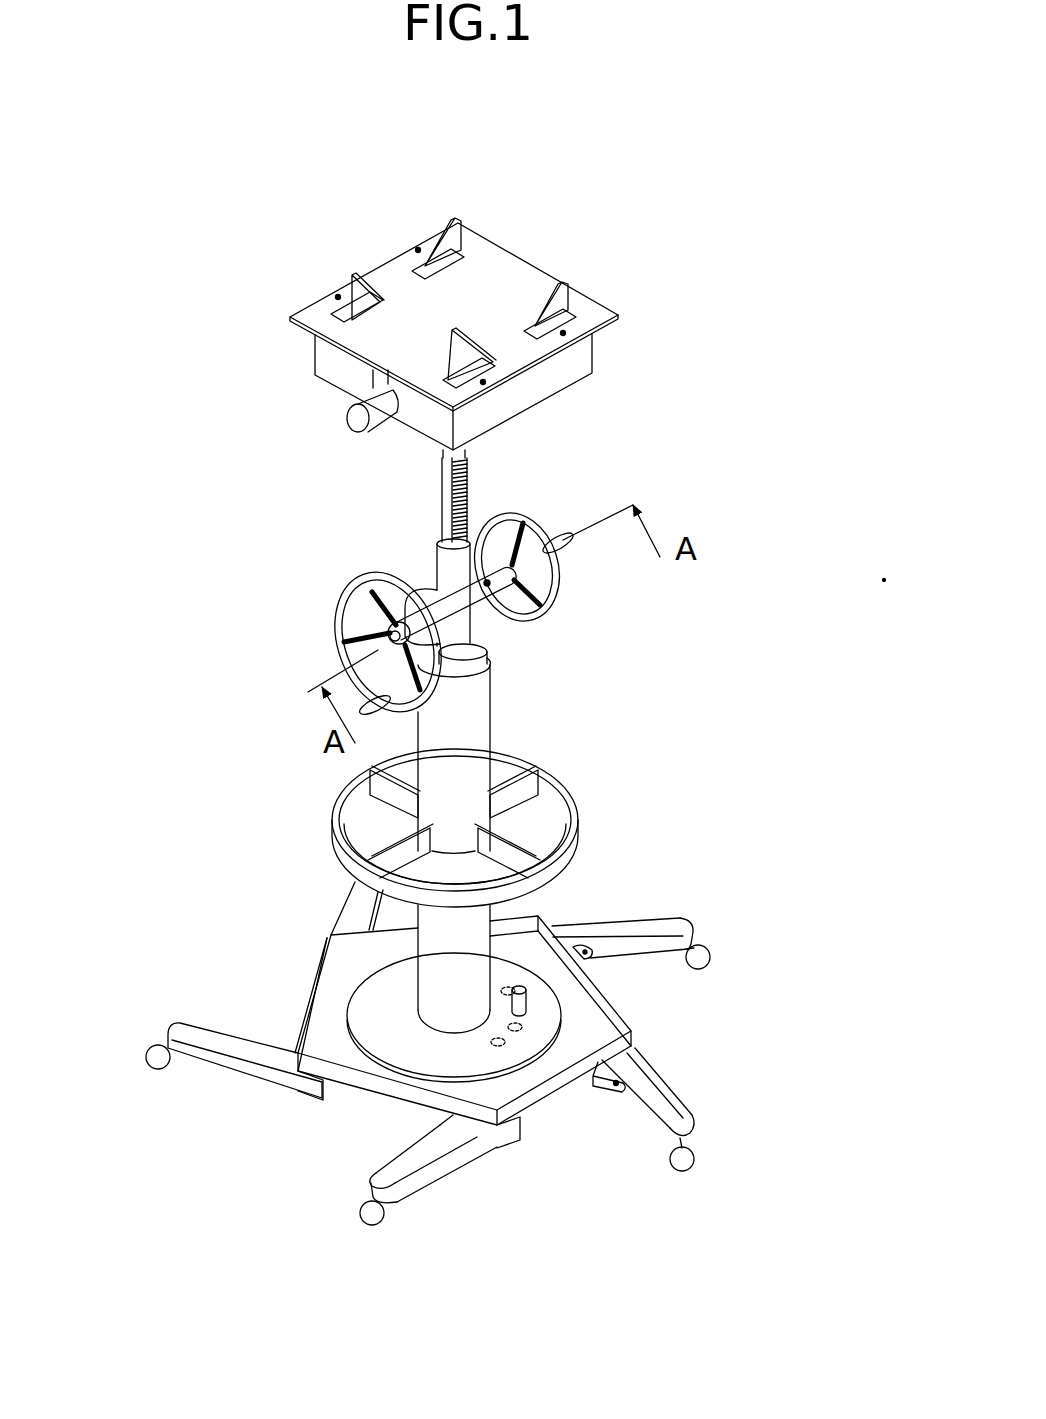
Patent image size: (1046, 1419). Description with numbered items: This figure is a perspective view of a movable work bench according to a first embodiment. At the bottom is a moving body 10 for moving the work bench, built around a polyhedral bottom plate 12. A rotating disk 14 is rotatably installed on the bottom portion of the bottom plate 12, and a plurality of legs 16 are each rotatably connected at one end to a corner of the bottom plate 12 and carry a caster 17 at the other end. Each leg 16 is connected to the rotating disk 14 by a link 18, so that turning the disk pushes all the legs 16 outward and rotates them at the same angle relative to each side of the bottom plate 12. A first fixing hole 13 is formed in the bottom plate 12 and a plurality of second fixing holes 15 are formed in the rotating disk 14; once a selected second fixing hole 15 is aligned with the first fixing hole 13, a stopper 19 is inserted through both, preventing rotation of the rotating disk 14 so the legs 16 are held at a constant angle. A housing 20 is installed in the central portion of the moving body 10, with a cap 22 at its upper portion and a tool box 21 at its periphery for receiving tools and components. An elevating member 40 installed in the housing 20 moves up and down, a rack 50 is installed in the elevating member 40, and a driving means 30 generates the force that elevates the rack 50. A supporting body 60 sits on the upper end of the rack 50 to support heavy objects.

The moving body 10 is at (480, 1068).
The bottom plate 12 is at (583, 1043).
The first fixing hole 13 is at (528, 1008).
The rotating disk 14 is at (382, 1048).
The second fixing holes 15 is at (490, 1047).
The legs 16 is at (653, 1122).
The caster 17 is at (687, 1157).
The links 18 is at (597, 1085).
The stopper 19 is at (528, 993).
The housing 20 is at (518, 827).
The tool box 21 is at (548, 828).
The cap 22 is at (473, 670).
The driving means 30 is at (490, 628).
The elevating member 40 is at (447, 563).
The rack 50 is at (447, 498).
The supporting body 60 is at (531, 250).